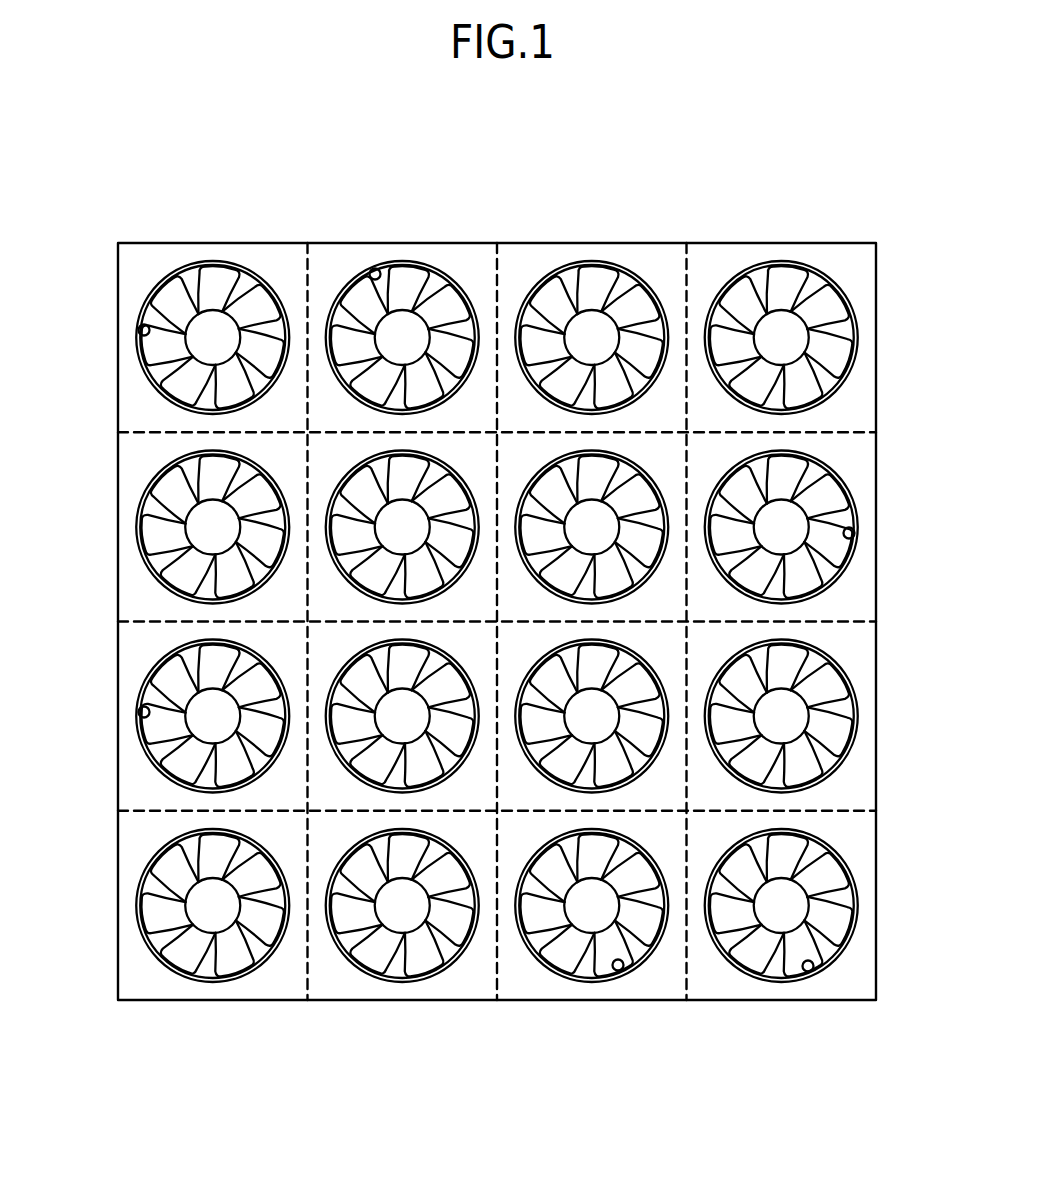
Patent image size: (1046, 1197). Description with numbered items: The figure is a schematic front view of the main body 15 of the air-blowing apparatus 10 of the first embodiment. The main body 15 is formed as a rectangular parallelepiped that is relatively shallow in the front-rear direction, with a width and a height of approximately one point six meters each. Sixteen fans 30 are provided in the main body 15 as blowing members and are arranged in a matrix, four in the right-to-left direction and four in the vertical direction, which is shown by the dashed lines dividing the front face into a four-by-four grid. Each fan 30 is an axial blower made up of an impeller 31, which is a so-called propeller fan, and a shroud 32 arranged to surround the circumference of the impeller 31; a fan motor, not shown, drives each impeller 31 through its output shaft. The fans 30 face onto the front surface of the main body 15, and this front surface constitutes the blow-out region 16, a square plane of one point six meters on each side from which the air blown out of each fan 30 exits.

The air-blowing apparatus 10 is at (129, 185).
The main body 15 is at (860, 243).
The blow-out region 16 is at (709, 273).
The fan 30 is at (499, 624).
The impeller 31 is at (496, 615).
The shroud 32 is at (497, 628).